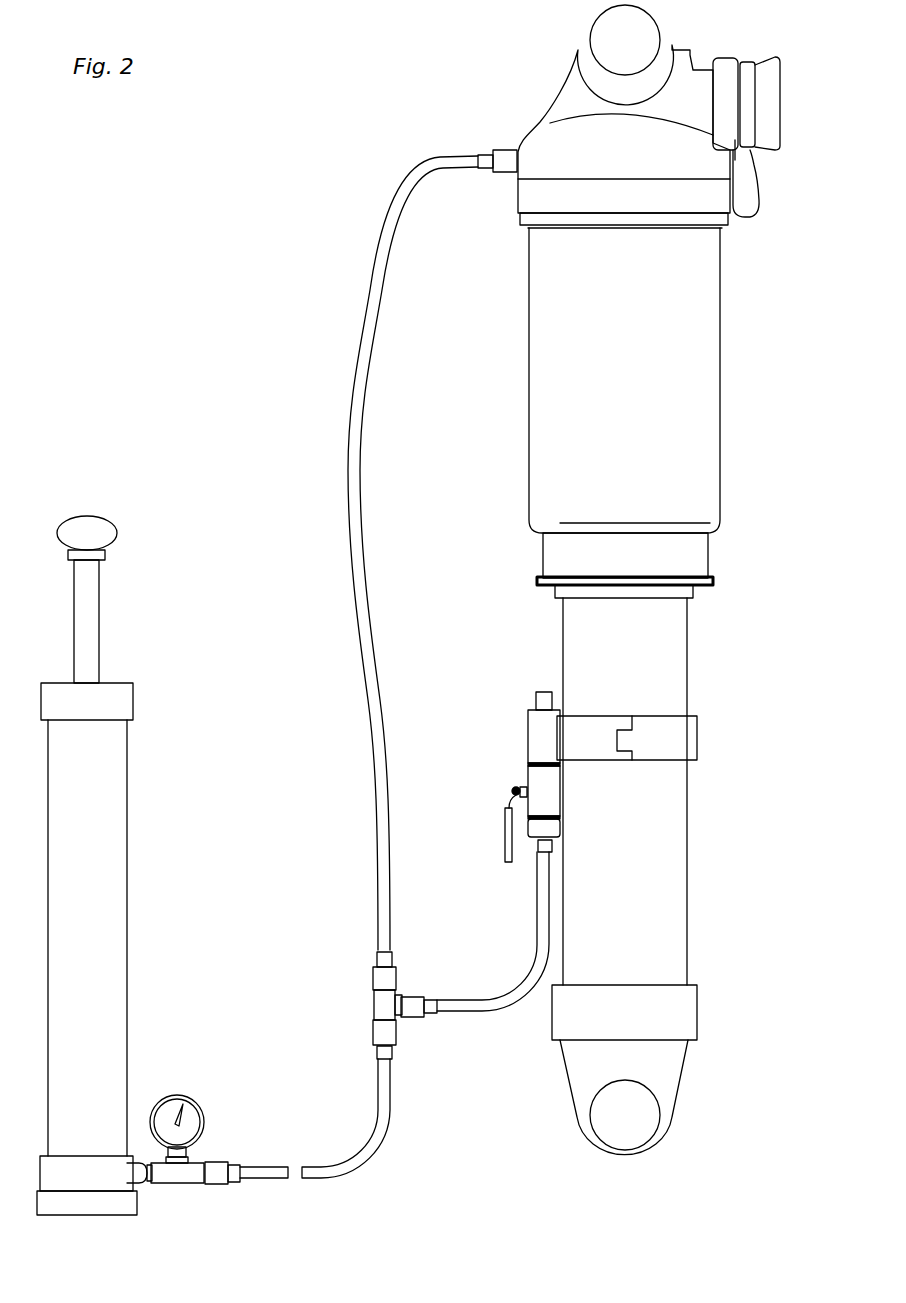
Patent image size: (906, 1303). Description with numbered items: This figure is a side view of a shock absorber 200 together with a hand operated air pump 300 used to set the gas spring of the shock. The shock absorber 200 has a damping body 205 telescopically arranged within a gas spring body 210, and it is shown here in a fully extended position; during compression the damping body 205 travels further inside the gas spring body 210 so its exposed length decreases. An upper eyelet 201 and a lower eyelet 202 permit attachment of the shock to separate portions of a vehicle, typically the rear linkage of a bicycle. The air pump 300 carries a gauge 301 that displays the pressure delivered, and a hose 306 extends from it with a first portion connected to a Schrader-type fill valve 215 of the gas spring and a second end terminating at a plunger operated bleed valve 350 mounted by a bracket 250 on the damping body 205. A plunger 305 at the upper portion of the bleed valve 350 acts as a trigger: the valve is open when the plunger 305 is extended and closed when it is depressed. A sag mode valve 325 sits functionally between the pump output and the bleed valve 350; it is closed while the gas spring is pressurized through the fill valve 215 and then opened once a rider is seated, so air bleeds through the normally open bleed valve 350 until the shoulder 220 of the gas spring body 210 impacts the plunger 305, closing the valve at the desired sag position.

The shock absorber 200 is at (455, 40).
The upper eyelet 201 is at (620, 72).
The fill valve 215 is at (503, 150).
The gas spring body 210 is at (720, 390).
The shoulder 220 is at (545, 586).
The damping body 205 is at (687, 870).
The lower eyelet 202 is at (632, 1146).
The bracket 250 is at (697, 738).
The plunger operated bleed valve 350 is at (527, 738).
The plunger 305 is at (540, 693).
The sag mode valve 325 is at (505, 832).
The hose 306 is at (347, 470).
The air pump 300 is at (127, 803).
The gauge 301 is at (177, 1095).